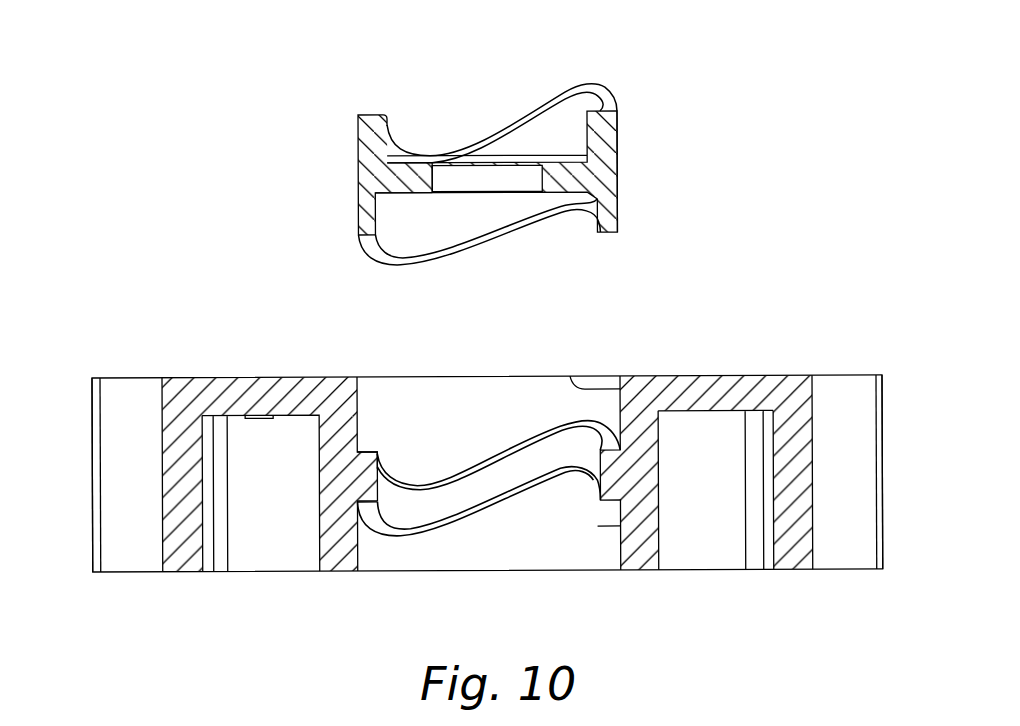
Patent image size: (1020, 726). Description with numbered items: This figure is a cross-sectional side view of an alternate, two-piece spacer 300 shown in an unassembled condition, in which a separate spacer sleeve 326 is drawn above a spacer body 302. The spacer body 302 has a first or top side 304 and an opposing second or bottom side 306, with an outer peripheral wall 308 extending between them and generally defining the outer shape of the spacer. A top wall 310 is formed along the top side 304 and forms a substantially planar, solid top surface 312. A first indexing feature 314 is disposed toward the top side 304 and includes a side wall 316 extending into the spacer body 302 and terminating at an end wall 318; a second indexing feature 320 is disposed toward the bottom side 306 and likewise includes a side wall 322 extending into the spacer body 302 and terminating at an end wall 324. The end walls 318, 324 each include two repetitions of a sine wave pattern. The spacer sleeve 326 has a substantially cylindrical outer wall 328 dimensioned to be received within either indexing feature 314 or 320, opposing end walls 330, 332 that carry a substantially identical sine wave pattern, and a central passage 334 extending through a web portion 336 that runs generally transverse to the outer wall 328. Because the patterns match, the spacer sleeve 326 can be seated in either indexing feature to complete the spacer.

The spacer 300 is at (176, 300).
The spacer body 302 is at (80, 438).
The top side 304 is at (847, 363).
The bottom side 306 is at (852, 577).
The outer peripheral wall 308 is at (132, 540).
The top wall 310 is at (710, 385).
The top surface 312 is at (292, 377).
The first indexing feature 314 is at (463, 448).
The side wall 316 is at (573, 376).
The end wall 318 is at (365, 450).
The second indexing feature 320 is at (465, 526).
The side wall 322 is at (600, 528).
The end wall 324 is at (372, 518).
The spacer sleeve 326 is at (640, 127).
The outer wall 328 is at (618, 182).
The end wall 330 is at (603, 97).
The end wall 332 is at (365, 247).
The central passage 334 is at (468, 170).
The web portion 336 is at (410, 177).